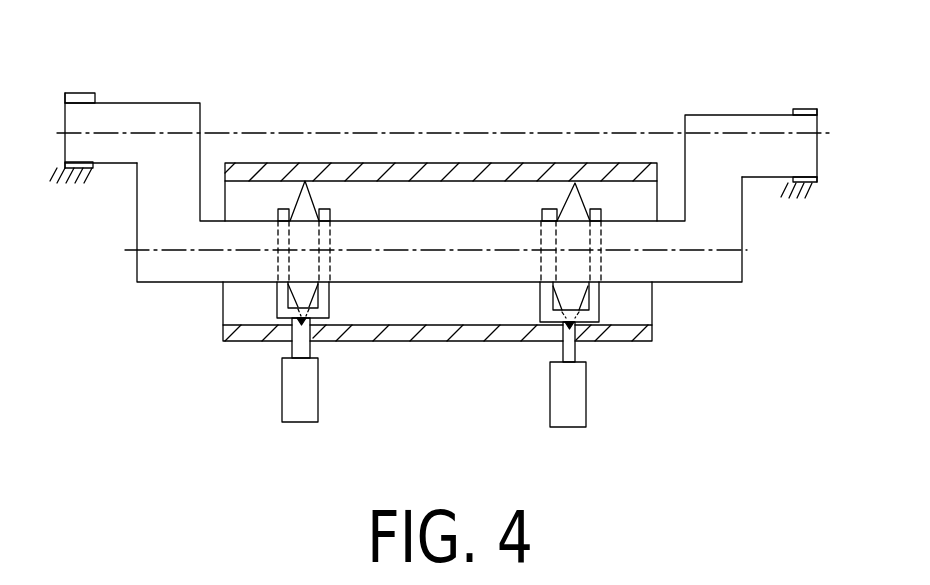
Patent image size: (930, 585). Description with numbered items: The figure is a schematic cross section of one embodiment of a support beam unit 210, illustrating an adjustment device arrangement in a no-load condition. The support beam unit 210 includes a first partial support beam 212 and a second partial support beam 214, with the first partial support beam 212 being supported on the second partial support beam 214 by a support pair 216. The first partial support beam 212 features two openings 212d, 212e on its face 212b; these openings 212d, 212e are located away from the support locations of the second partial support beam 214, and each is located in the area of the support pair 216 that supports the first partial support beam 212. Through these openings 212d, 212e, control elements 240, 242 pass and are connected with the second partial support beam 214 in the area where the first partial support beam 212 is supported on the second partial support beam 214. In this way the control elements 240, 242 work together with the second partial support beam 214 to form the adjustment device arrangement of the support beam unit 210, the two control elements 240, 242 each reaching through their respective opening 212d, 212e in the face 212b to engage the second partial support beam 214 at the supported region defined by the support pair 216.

The support beam unit 210 is at (402, 115).
The second partial support beam 214 is at (133, 262).
The support pair 216 is at (298, 187).
The first partial support beam 212 is at (392, 342).
The face 212b is at (222, 327).
The opening 212d is at (290, 326).
The opening 212e is at (557, 330).
The control element 240 is at (305, 349).
The control element 242 is at (568, 349).